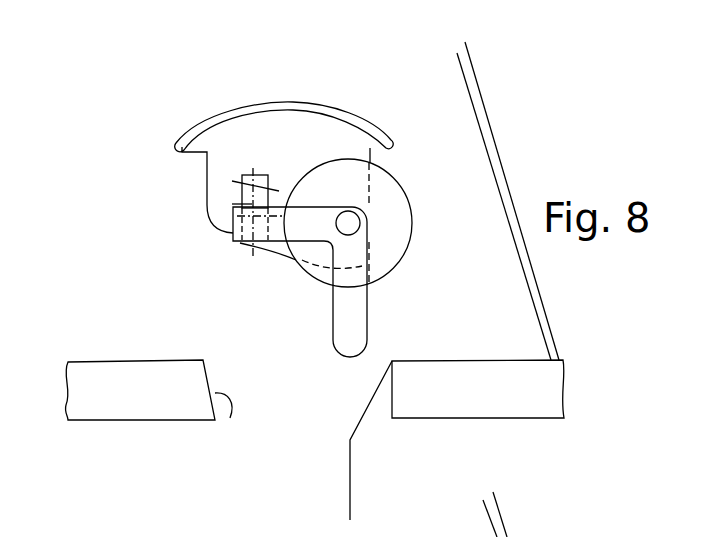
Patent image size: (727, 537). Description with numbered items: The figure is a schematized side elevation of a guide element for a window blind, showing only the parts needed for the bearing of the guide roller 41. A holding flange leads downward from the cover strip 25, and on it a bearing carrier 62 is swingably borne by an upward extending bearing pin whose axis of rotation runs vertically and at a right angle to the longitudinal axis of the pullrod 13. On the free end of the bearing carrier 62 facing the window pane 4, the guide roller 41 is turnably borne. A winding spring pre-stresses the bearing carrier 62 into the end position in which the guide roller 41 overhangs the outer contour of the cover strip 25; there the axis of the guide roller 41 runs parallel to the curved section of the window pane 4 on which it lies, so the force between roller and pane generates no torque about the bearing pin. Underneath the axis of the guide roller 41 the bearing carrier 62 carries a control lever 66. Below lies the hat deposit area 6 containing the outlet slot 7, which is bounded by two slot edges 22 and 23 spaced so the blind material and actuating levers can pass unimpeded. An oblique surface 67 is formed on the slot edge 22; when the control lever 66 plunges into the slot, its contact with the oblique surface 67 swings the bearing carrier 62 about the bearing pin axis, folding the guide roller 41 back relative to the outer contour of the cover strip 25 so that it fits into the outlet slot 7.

The pullrod 13 is at (243, 86).
The cover strip 25 is at (317, 103).
The window pane 4 is at (480, 108).
The guide roller 41 is at (395, 218).
The bearing carrier 62 is at (290, 228).
The control lever 66 is at (353, 322).
The hat deposit area 6 is at (457, 360).
The oblique surface 67 is at (358, 426).
The slot edge 22 is at (389, 406).
The outlet slot 7 is at (225, 358).
The slot edge 23 is at (230, 418).